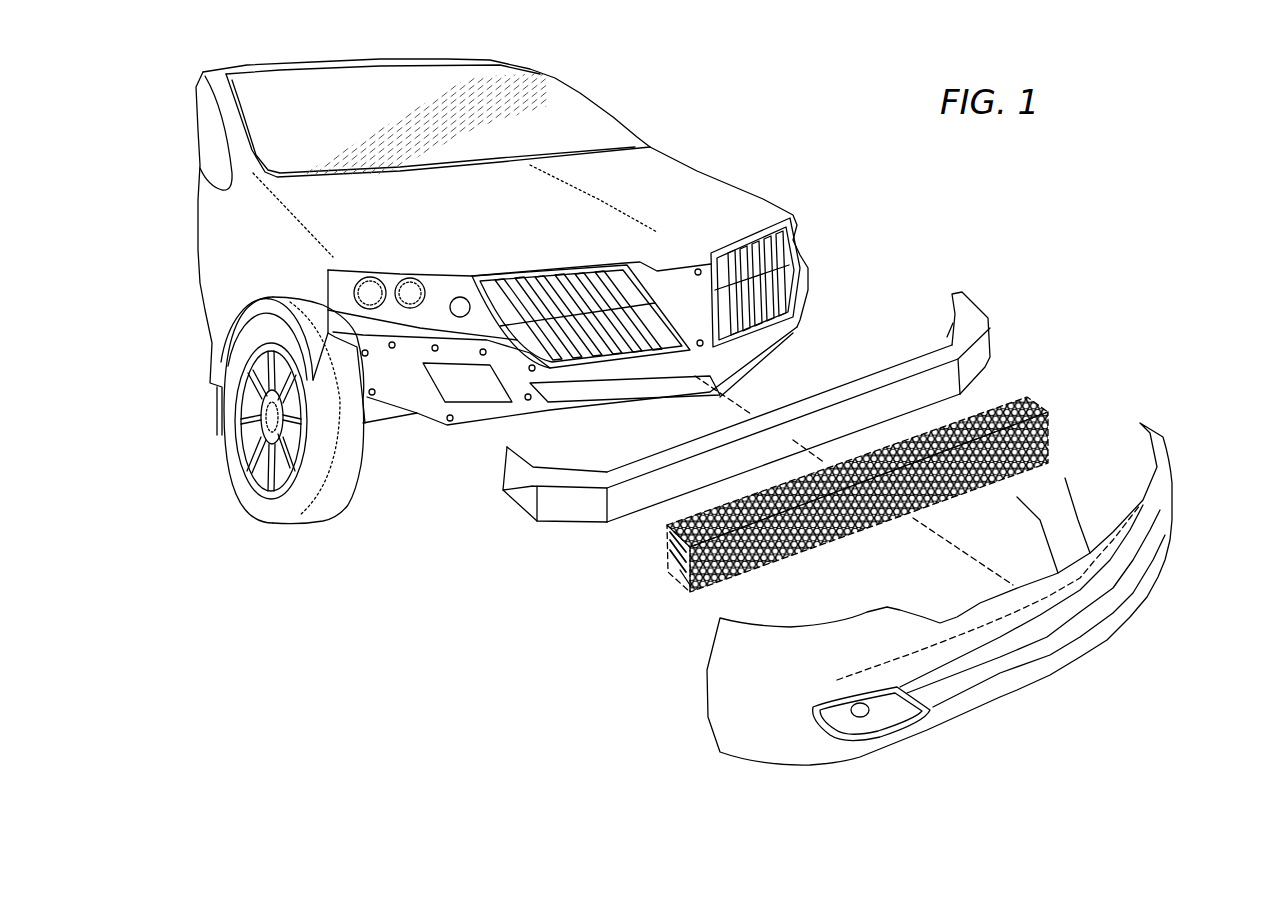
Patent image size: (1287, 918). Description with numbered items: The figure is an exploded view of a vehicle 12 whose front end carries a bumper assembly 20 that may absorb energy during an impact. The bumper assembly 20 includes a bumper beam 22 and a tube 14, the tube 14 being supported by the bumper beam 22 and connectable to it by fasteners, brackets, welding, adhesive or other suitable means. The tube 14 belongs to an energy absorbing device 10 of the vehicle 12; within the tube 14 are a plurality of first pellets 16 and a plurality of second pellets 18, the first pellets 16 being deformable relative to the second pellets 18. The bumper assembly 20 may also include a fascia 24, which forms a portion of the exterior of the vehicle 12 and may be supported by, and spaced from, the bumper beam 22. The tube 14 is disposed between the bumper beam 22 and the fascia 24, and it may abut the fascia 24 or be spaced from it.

The energy absorbing device 10 is at (1057, 348).
The vehicle 12 is at (636, 96).
The tube 14 is at (842, 502).
The first pellets 16 is at (667, 556).
The second pellets 18 is at (685, 586).
The bumper assembly 20 is at (812, 430).
The bumper beam 22 is at (977, 307).
The fascia 24 is at (1157, 434).